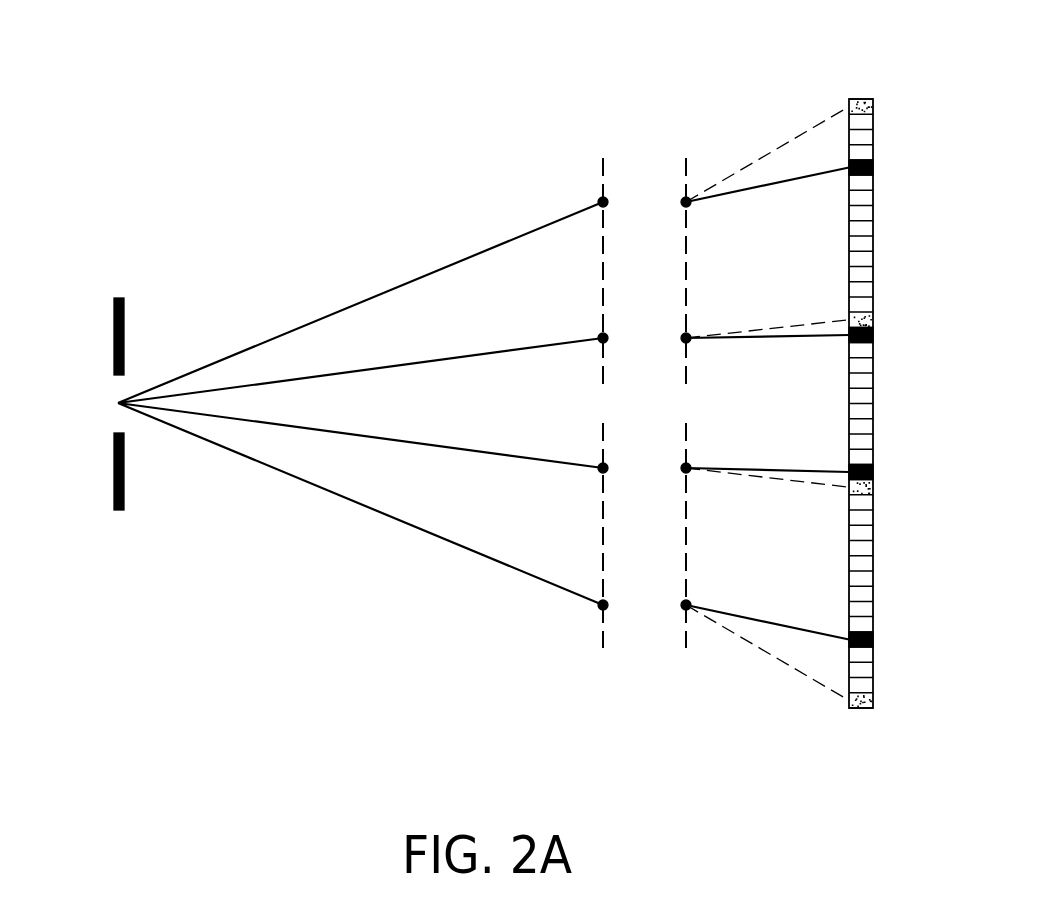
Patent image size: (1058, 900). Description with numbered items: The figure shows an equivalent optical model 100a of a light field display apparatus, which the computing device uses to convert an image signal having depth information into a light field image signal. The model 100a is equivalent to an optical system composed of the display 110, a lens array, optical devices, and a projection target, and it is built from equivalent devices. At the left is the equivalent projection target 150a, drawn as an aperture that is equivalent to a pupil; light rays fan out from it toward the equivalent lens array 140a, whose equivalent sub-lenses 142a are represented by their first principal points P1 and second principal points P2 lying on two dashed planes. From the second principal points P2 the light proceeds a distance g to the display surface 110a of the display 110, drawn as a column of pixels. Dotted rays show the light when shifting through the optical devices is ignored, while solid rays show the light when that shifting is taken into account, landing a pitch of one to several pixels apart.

The equivalent optical model 100a is at (931, 815).
The display 110 is at (853, 361).
The display surface 110a is at (847, 145).
The equivalent lens array 140a is at (603, 163).
The equivalent sub-lenses 142a is at (603, 240).
The equivalent projection target 150a is at (113, 385).
The first principal points P1 is at (606, 201).
The second principal points P2 is at (683, 200).